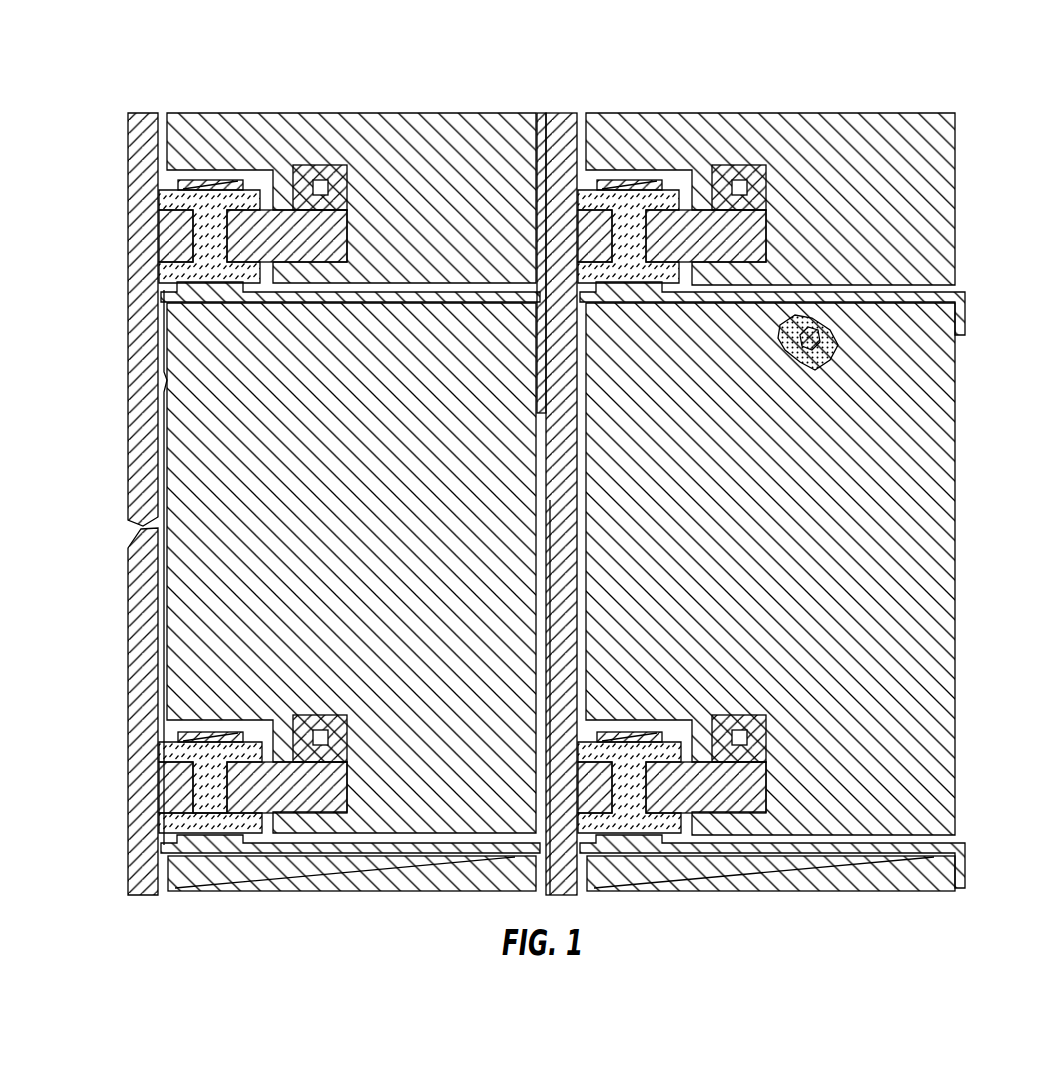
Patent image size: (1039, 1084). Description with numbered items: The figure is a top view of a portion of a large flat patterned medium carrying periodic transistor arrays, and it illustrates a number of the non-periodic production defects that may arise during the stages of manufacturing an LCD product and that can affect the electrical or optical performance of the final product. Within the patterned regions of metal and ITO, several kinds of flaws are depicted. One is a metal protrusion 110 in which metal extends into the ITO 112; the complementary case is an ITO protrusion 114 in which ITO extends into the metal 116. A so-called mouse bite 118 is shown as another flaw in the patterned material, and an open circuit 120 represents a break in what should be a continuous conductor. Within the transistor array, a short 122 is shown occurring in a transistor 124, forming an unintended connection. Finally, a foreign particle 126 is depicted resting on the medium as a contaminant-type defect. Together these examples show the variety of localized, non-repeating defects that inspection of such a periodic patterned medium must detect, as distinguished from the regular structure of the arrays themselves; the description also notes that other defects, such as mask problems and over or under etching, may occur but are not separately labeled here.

The metal protrusion 110 is at (537, 412).
The ITO 112 is at (715, 113).
The ITO protrusion 114 is at (158, 394).
The metal 116 is at (143, 113).
The mouse bite 118 is at (548, 500).
The open circuit 120 is at (130, 530).
The short 122 is at (221, 813).
The transistor 124 is at (221, 815).
The foreign particle 126 is at (838, 345).